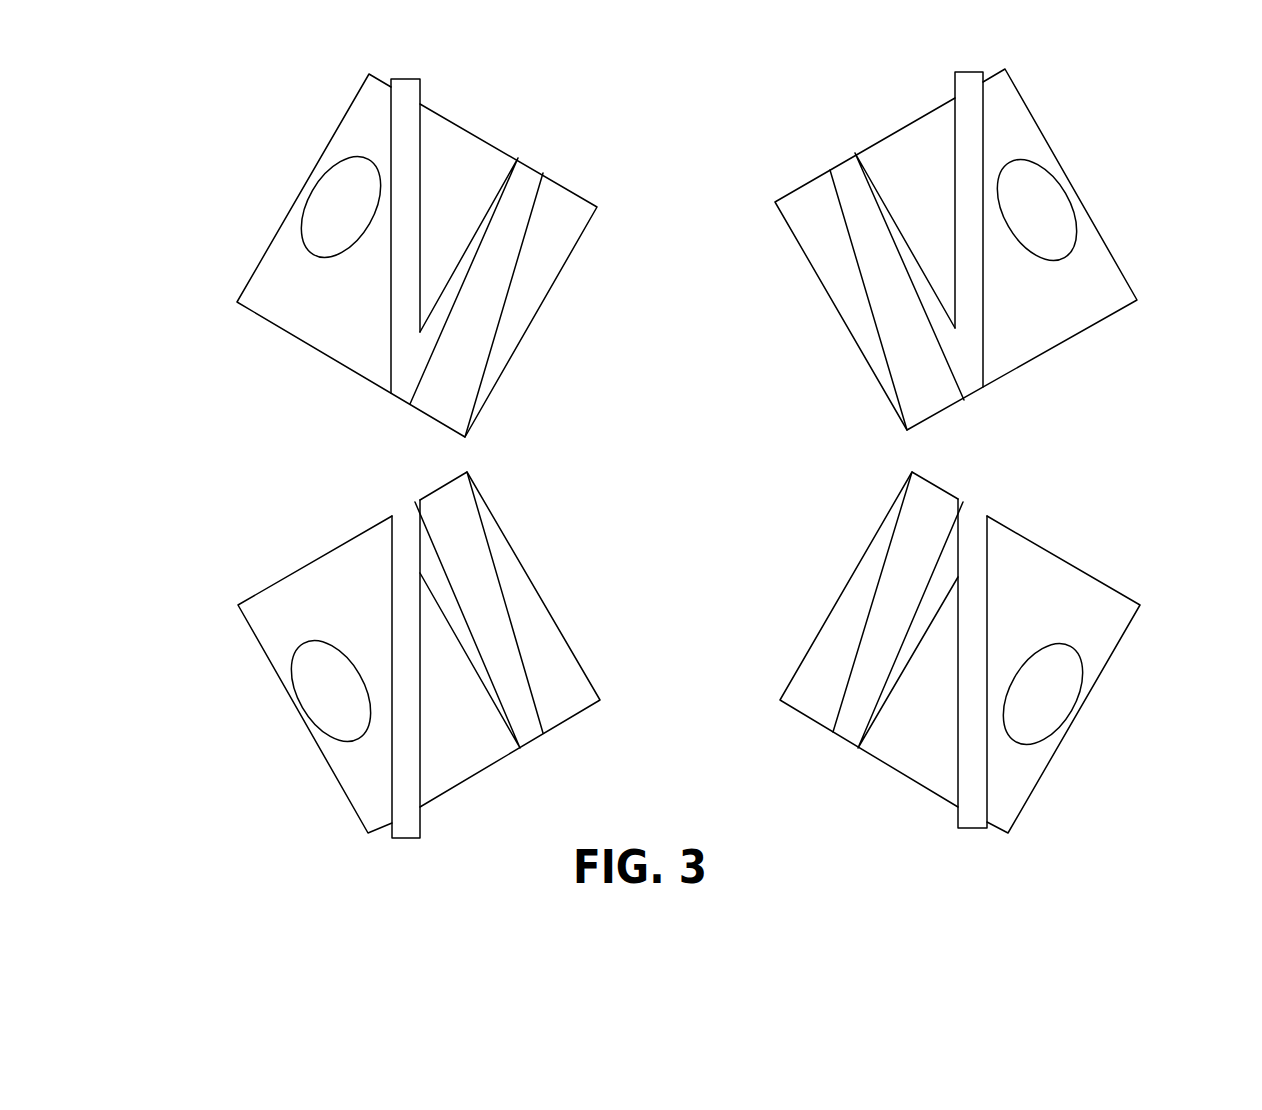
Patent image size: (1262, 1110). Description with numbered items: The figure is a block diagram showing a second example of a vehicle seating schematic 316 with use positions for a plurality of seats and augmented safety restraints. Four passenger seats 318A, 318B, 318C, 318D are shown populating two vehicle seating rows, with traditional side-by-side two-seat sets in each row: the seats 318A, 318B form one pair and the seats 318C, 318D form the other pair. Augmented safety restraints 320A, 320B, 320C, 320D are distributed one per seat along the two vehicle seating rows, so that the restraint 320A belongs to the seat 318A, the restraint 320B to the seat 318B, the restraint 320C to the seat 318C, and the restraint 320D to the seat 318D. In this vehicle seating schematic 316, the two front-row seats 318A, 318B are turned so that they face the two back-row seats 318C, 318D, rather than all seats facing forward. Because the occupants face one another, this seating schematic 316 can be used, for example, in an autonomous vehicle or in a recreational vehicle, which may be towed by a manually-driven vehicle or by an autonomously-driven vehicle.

The vehicle seating schematic 316 is at (212, 200).
The passenger seat 318A is at (263, 590).
The passenger seat 318B is at (567, 188).
The passenger seat 318C is at (1118, 590).
The passenger seat 318D is at (842, 168).
The augmented safety restraint 320A is at (393, 513).
The augmented safety restraint 320B is at (420, 78).
The augmented safety restraint 320C is at (977, 510).
The augmented safety restraint 320D is at (967, 72).